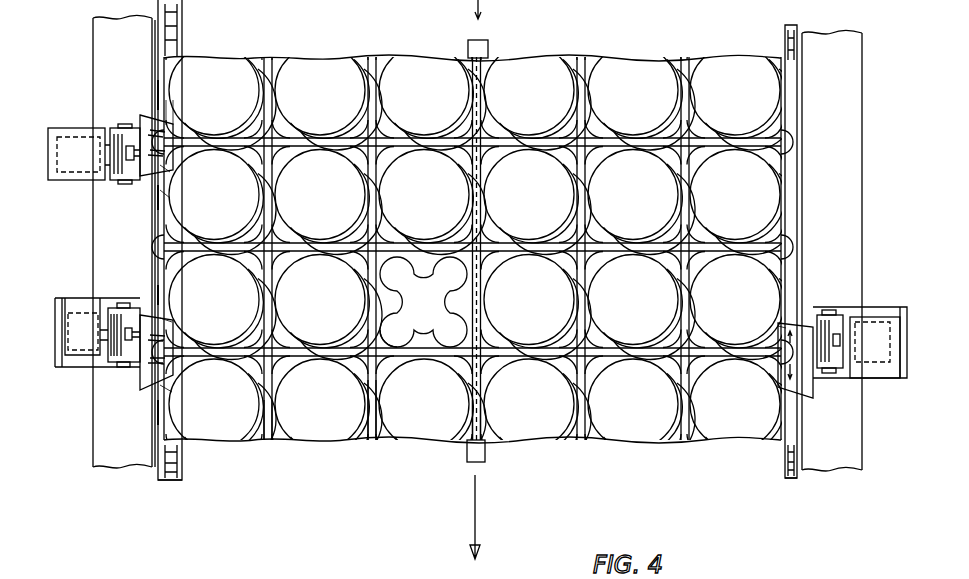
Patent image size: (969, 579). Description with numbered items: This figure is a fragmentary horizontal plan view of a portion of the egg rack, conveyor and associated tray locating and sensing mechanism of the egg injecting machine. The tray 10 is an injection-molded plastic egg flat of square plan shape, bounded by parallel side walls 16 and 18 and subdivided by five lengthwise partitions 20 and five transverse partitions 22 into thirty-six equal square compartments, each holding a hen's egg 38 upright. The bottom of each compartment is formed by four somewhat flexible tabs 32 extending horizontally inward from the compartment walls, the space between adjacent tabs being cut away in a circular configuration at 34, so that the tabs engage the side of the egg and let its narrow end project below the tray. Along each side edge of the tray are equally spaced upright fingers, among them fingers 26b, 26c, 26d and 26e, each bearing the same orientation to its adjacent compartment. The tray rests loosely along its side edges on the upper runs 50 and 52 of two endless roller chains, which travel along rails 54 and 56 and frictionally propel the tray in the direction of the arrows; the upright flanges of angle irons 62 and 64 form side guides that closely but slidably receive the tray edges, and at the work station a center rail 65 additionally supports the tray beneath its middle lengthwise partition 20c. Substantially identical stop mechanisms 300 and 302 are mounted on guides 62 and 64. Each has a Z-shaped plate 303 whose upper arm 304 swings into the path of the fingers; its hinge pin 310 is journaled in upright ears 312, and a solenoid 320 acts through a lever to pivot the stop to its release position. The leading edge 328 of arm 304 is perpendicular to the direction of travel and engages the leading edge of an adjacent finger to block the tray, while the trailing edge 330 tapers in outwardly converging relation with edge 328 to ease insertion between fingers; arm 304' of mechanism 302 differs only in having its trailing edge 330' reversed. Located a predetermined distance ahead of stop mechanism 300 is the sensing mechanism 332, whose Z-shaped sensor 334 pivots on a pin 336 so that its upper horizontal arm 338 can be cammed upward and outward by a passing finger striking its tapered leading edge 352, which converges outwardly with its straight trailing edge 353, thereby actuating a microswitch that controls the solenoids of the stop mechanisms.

The tray 10 is at (583, 449).
The side wall 16 is at (130, 246).
The side wall 18 is at (798, 114).
The lengthwise partition 20 is at (270, 441).
The middle lengthwise partition 20c is at (483, 441).
The transverse partition 22 is at (257, 357).
The finger 26b is at (160, 412).
The finger 26c is at (158, 295).
The finger 26d is at (160, 197).
The finger 26e is at (160, 92).
The tab 32 is at (447, 295).
The circular cut-away 34 is at (392, 349).
The hen's egg 38 is at (340, 432).
The upper run 50 is at (172, 458).
The upper run 52 is at (781, 458).
The rail 54 is at (170, 484).
The rail 56 is at (788, 480).
The angle iron 62 is at (121, 469).
The angle iron 64 is at (830, 471).
The center rail 65 is at (470, 462).
The stop mechanism 300 is at (78, 380).
The stop mechanism 302 is at (907, 391).
The Z-shaped plate 303 is at (186, 331).
The upper arm 304 is at (195, 301).
The upper arm 304' is at (756, 323).
The hinge pin 310 is at (125, 366).
The upright ear 312 is at (100, 292).
The solenoid 320 is at (80, 298).
The leading edge 328 is at (180, 296).
The trailing edge 330 is at (194, 379).
The trailing edge 330' is at (753, 389).
The sensing mechanism 332 is at (59, 118).
The Z-shaped sensor 334 is at (184, 168).
The pin 336 is at (125, 125).
The upper horizontal arm 338 is at (166, 172).
The leading edge 352 is at (172, 121).
The trailing edge 353 is at (165, 195).